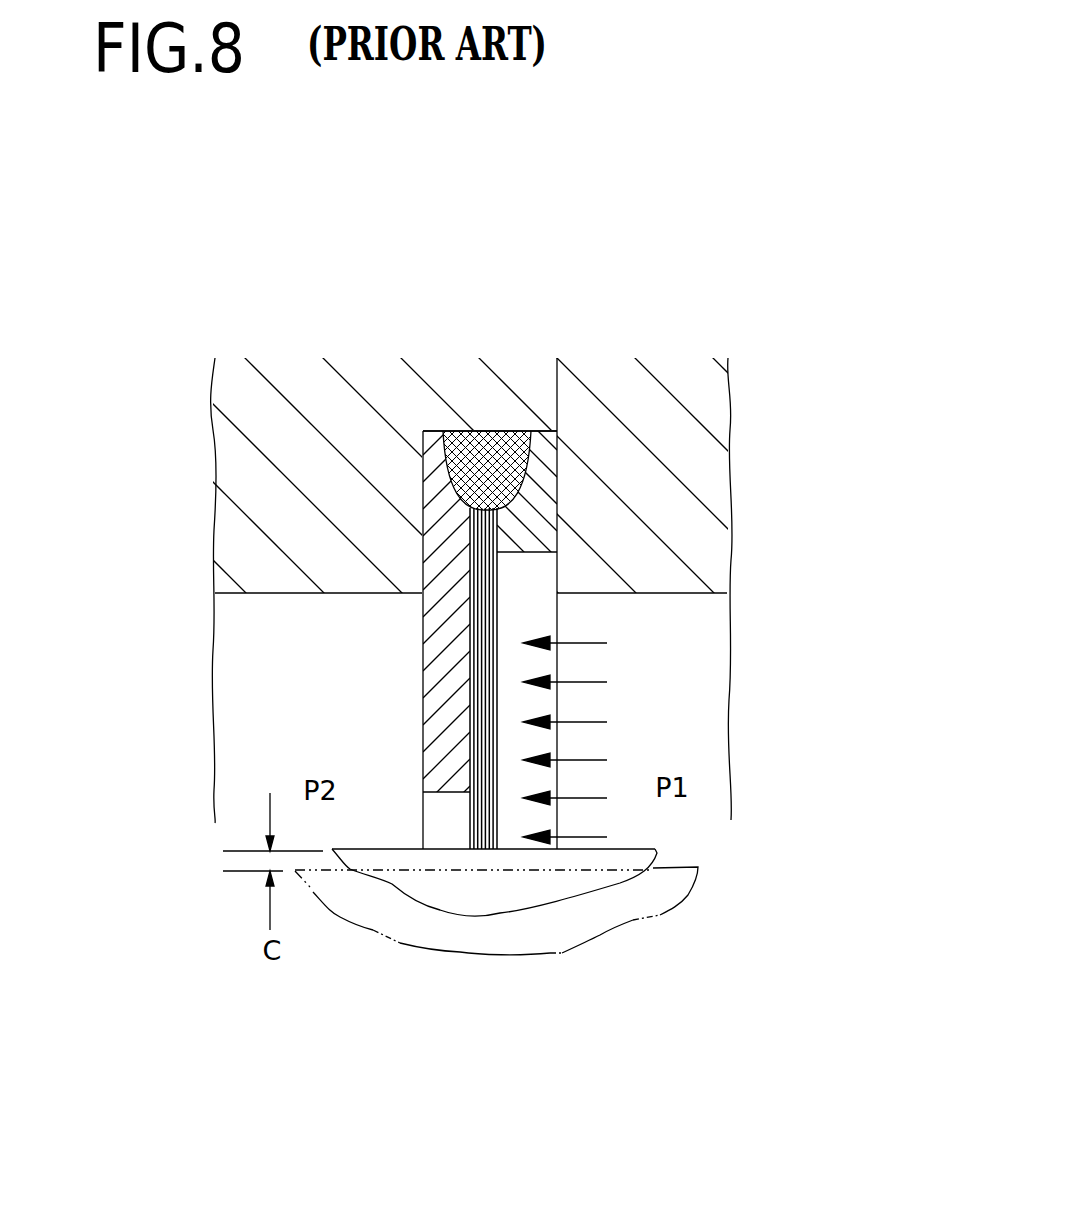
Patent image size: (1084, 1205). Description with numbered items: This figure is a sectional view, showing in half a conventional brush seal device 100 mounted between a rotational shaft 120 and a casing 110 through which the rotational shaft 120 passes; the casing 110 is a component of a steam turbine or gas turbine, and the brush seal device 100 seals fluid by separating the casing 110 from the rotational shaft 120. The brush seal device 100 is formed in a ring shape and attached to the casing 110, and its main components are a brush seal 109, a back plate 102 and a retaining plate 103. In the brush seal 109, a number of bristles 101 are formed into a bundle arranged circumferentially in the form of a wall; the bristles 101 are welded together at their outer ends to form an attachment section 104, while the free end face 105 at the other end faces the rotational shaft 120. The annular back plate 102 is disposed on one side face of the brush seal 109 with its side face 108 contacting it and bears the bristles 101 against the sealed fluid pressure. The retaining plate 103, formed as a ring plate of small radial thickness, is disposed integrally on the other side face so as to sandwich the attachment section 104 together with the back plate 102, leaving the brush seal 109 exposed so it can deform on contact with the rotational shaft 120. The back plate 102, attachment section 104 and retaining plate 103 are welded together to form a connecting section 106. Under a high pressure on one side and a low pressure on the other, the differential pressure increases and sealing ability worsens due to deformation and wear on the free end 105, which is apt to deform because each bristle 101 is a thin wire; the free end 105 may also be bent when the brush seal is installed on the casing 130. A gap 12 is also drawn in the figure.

The brush seal device 100 is at (751, 365).
The casing 130 is at (208, 442).
The back plate 102 is at (447, 522).
The connecting section 106 is at (433, 432).
The attachment section 104 is at (483, 431).
The retaining plate 103 is at (556, 468).
The gap 12 is at (558, 545).
The brush seal 109 is at (514, 606).
The casing 110 is at (690, 705).
The side face 108 is at (492, 752).
The bristles 101 is at (470, 698).
The free end face 105 is at (487, 849).
The rotational shaft 120 is at (516, 892).